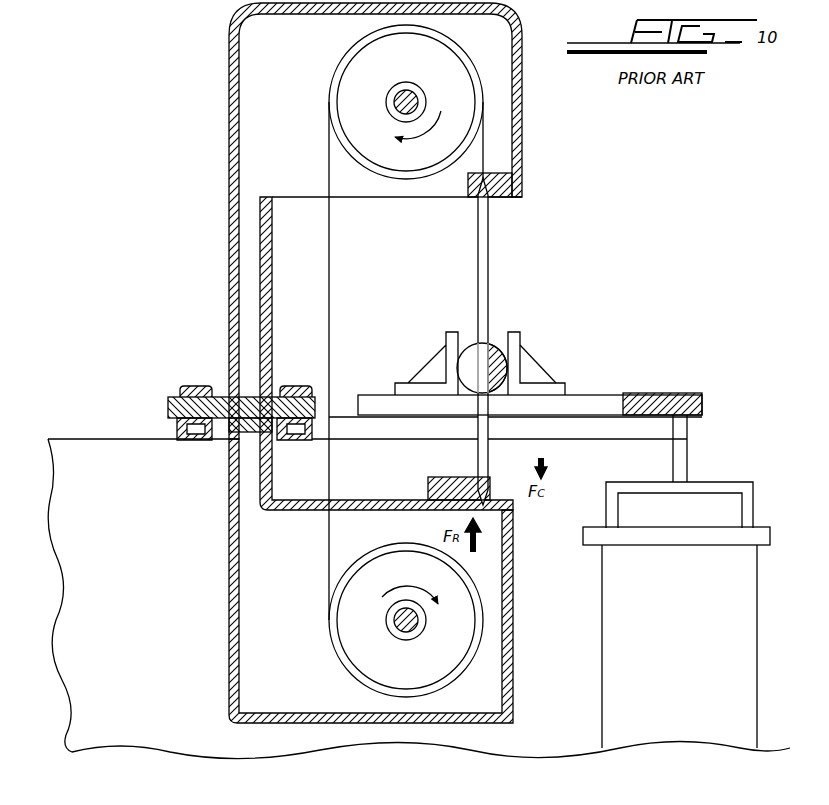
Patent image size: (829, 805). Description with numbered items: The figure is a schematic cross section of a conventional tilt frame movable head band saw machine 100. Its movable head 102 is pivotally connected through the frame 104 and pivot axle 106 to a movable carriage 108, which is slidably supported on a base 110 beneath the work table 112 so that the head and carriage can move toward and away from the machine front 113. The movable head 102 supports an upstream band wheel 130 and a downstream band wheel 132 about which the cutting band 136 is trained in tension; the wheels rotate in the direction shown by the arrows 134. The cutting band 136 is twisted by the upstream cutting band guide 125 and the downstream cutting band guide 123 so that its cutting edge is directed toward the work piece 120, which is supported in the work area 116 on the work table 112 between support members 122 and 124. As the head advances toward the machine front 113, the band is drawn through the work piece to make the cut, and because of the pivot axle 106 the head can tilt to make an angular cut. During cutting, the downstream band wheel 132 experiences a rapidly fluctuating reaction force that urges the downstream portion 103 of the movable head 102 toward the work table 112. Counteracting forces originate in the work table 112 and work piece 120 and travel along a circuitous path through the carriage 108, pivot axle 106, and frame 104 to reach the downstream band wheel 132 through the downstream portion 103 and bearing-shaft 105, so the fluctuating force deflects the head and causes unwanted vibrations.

The tilt frame movable head band saw machine 100 is at (594, 288).
The movable head 102 is at (229, 101).
The downstream portion of movable head 103 is at (231, 656).
The frame 104 is at (229, 290).
The bearing-shaft 105 is at (405, 632).
The pivot axle 106 is at (169, 406).
The movable carriage 108 is at (343, 418).
The base 110 is at (650, 470).
The work table 112 is at (588, 397).
The machine front 113 is at (716, 403).
The work area 116 is at (533, 318).
The work piece 120 is at (490, 347).
The support member 122 is at (452, 332).
The downstream cutting band guide 123 is at (428, 482).
The support member 124 is at (535, 362).
The upstream cutting band guide 125 is at (468, 188).
The upstream band wheel 130 is at (352, 75).
The downstream band wheel 132 is at (357, 660).
The arrows indicating direction of rotation 134 is at (411, 357).
The cutting band 136 is at (490, 273).